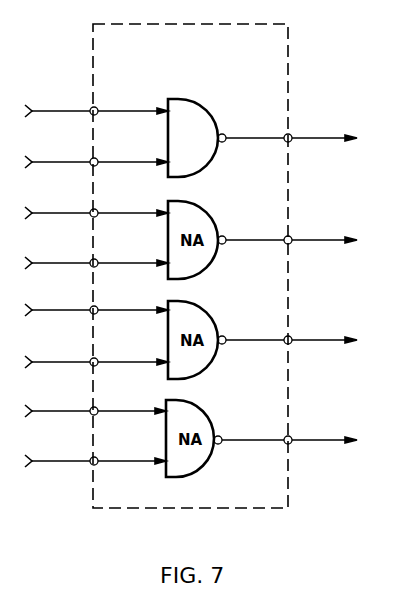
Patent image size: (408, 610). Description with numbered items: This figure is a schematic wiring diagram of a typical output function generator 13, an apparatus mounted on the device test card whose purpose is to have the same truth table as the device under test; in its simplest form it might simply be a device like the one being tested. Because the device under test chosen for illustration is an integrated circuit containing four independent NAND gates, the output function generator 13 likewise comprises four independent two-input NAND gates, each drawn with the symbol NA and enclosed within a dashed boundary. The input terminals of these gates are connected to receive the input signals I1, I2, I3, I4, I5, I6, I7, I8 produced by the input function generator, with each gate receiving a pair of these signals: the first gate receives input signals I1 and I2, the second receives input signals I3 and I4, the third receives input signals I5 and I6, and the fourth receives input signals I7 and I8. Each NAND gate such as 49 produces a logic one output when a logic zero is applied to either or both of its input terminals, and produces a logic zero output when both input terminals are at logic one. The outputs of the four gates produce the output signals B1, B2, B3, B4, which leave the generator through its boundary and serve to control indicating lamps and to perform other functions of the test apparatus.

The NAND gate 49 is at (207, 168).
The output function generator 13 is at (289, 484).
The input signal I1 is at (96, 103).
The input signal I2 is at (96, 154).
The input signal I3 is at (96, 205).
The input signal I4 is at (96, 255).
The input signal I5 is at (96, 302).
The input signal I6 is at (96, 354).
The input signal I7 is at (95, 403).
The input signal I8 is at (95, 453).
The output signal B1 is at (291, 130).
The output signal B2 is at (291, 232).
The output signal B3 is at (291, 332).
The output signal B4 is at (289, 432).